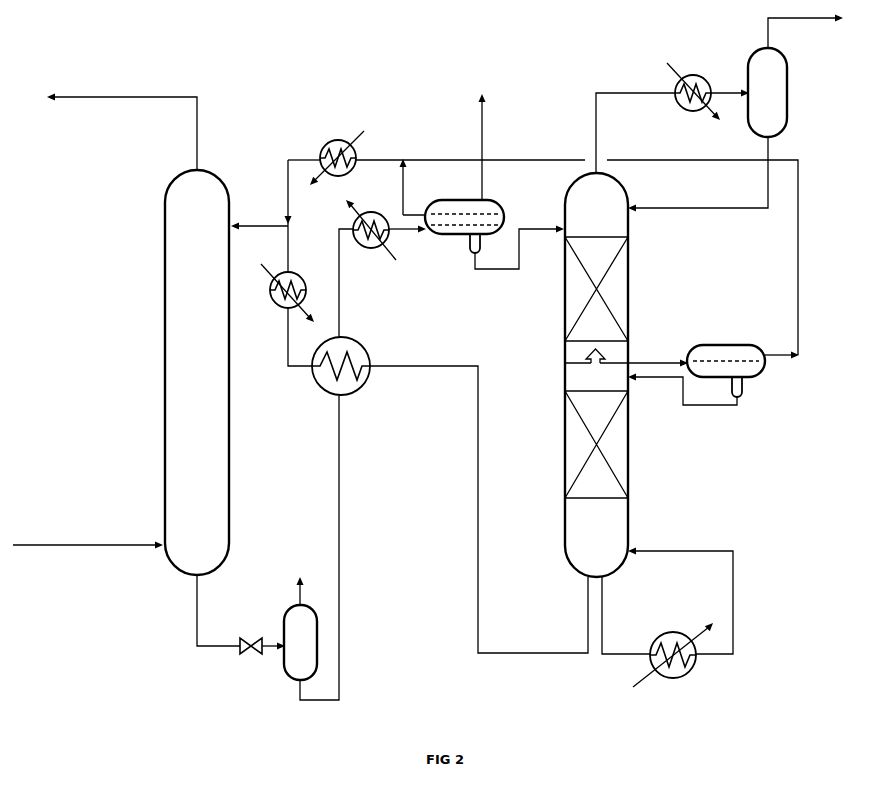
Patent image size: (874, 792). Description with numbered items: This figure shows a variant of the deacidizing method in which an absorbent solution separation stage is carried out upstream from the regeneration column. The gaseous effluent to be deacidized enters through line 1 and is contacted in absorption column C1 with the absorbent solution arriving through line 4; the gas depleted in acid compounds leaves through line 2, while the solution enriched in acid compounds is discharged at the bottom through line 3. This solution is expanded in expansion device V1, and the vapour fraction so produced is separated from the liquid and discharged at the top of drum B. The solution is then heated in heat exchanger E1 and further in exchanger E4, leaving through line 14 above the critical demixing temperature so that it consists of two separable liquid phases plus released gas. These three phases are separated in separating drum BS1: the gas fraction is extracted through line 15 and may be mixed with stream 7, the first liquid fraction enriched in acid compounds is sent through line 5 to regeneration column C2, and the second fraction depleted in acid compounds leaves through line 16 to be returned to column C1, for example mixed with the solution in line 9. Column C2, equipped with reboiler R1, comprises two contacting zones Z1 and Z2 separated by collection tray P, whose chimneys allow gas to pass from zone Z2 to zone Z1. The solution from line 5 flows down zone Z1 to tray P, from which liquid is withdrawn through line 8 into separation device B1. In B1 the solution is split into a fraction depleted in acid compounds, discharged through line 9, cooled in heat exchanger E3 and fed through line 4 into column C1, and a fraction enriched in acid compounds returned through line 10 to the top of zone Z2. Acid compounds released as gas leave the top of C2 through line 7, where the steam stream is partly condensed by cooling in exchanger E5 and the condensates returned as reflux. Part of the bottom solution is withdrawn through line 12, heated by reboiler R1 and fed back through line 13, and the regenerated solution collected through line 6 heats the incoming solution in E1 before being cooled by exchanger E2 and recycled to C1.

The line 1 is at (78, 543).
The line 2 is at (100, 96).
The line 3 is at (219, 645).
The line 4 is at (266, 225).
The line 5 is at (535, 227).
The line 6 is at (517, 652).
The line 7 is at (613, 91).
The line 8 is at (653, 362).
The line 9 is at (779, 353).
The line 10 is at (652, 383).
The line 12 is at (605, 612).
The line 13 is at (682, 550).
The line 14 is at (412, 232).
The line 15 is at (480, 120).
The line 16 is at (405, 178).
The absorption column C1 is at (232, 431).
The regeneration column C2 is at (563, 305).
The first contacting zone Z1 is at (619, 276).
The second contacting zone Z2 is at (617, 454).
The collection tray P is at (565, 363).
The drum B is at (311, 547).
The separation device B1 is at (708, 345).
The separating drum BS1 is at (497, 197).
The expansion device V1 is at (262, 659).
The heat exchanger E1 is at (358, 342).
The exchanger E2 is at (305, 278).
The heat exchanger E3 is at (356, 170).
The exchanger E4 is at (368, 252).
The condenser E5 is at (705, 72).
The reboiler R1 is at (683, 678).